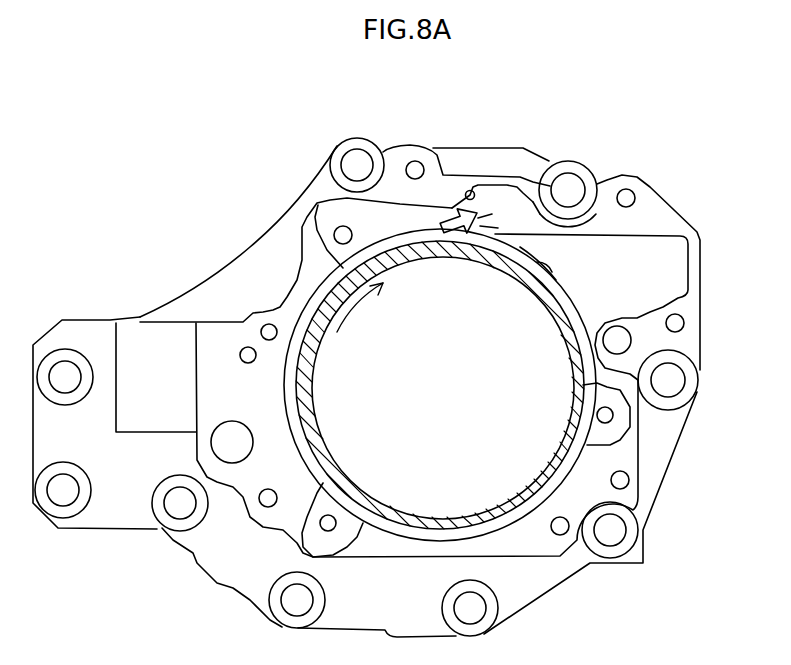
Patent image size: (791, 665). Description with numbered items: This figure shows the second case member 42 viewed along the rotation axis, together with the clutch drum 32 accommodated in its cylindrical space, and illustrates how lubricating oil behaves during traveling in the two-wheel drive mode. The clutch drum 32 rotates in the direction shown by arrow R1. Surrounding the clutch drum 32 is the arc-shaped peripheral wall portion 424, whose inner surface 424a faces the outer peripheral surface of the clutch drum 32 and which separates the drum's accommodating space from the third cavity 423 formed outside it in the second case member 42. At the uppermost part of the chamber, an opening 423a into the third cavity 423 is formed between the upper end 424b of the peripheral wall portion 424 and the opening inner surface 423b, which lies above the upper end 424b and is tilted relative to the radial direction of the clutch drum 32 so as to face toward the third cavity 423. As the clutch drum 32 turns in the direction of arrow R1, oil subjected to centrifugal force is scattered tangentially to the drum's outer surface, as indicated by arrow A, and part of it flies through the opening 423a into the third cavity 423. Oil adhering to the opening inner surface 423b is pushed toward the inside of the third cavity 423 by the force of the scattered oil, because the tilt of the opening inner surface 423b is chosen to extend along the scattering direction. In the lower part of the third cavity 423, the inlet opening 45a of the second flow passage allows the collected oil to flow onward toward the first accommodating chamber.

The second case member 42 is at (300, 182).
The clutch drum 32 is at (323, 297).
The third cavity 423 is at (627, 277).
The opening 423a is at (490, 215).
The opening inner surface 423b is at (478, 206).
The peripheral wall portion 424 is at (543, 263).
The inner surface 424a is at (549, 277).
The upper end 424b is at (485, 224).
The inlet opening 45a is at (622, 338).
The arrow A is at (447, 203).
The arrow R1 is at (360, 307).